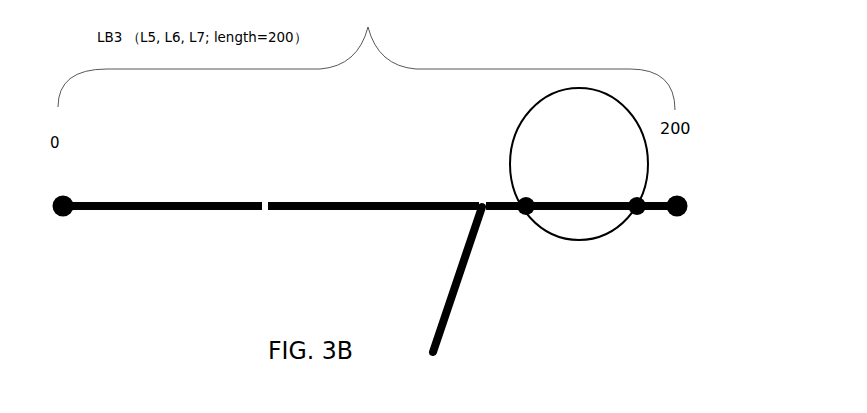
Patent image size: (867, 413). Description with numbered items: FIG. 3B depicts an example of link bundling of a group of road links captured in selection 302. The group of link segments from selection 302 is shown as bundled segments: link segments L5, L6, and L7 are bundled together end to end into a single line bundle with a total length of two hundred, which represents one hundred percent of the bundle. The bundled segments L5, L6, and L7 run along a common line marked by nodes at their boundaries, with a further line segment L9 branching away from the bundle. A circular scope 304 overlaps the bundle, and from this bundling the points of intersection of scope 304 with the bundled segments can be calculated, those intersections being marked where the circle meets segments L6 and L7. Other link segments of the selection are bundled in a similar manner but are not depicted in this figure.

The selection 302 is at (716, 83).
The scope 304 is at (510, 146).
The link segment L5 is at (132, 202).
The link segment L6 is at (337, 202).
The link segment L7 is at (653, 212).
The line segment L9 is at (438, 319).